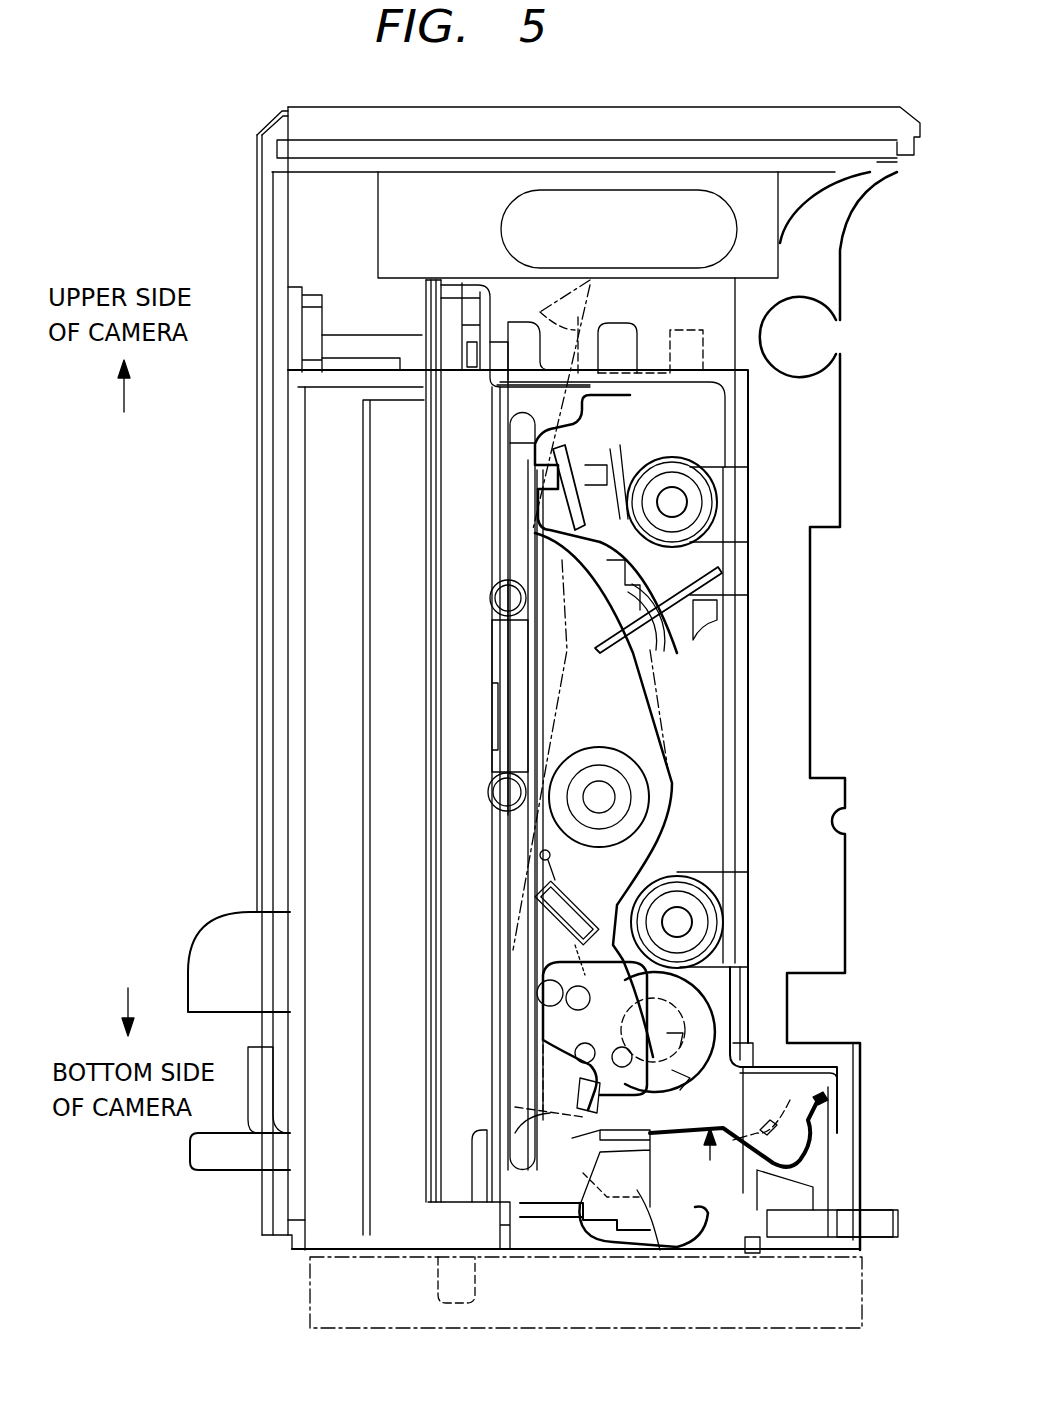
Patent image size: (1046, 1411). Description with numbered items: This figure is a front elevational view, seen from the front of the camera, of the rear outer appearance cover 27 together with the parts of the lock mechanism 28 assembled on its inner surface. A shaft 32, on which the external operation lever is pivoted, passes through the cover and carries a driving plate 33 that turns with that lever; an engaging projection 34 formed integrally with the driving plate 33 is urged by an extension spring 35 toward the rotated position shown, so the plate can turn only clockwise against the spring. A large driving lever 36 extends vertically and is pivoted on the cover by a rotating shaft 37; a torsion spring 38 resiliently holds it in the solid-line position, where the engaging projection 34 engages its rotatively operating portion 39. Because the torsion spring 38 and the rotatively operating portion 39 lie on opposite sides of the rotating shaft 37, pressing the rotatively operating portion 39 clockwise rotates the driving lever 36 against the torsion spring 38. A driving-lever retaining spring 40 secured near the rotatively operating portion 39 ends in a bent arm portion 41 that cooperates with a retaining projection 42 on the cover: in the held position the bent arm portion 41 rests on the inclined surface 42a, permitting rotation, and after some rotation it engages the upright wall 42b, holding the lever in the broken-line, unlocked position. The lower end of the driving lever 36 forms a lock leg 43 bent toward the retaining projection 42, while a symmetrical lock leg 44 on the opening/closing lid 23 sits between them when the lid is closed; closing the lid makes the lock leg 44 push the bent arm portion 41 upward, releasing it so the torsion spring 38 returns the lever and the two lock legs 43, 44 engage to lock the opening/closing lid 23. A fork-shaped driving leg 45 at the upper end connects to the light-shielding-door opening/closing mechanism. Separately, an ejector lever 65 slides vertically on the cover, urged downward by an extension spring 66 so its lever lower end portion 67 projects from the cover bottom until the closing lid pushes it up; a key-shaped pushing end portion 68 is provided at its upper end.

The opening/closing lid 23 is at (323, 1295).
The rear outer appearance cover 27 is at (765, 600).
The lock mechanism 28 is at (523, 1087).
The shaft 32 is at (733, 977).
The driving plate 33 is at (700, 1017).
The engaging projection 34 is at (700, 1050).
The extension spring 35 is at (593, 877).
The driving lever 36 is at (608, 706).
The rotating shaft 37 is at (606, 797).
The torsion spring 38 is at (653, 573).
The rotatively operating portion 39 is at (670, 1095).
The driving-lever retaining spring 40 is at (712, 1165).
The bent arm portion 41 is at (827, 1117).
The retaining projection 42 is at (790, 1193).
The inclined surface 42a is at (810, 1167).
The upright wall 42b is at (757, 1253).
The lock leg 43 is at (667, 1227).
The lock leg 44 is at (670, 1183).
The driving leg 45 is at (683, 330).
The ejector lever 65 is at (462, 815).
The extension spring 66 is at (500, 708).
The lever lower end portion 67 is at (470, 1287).
The pushing end portion 68 is at (480, 325).